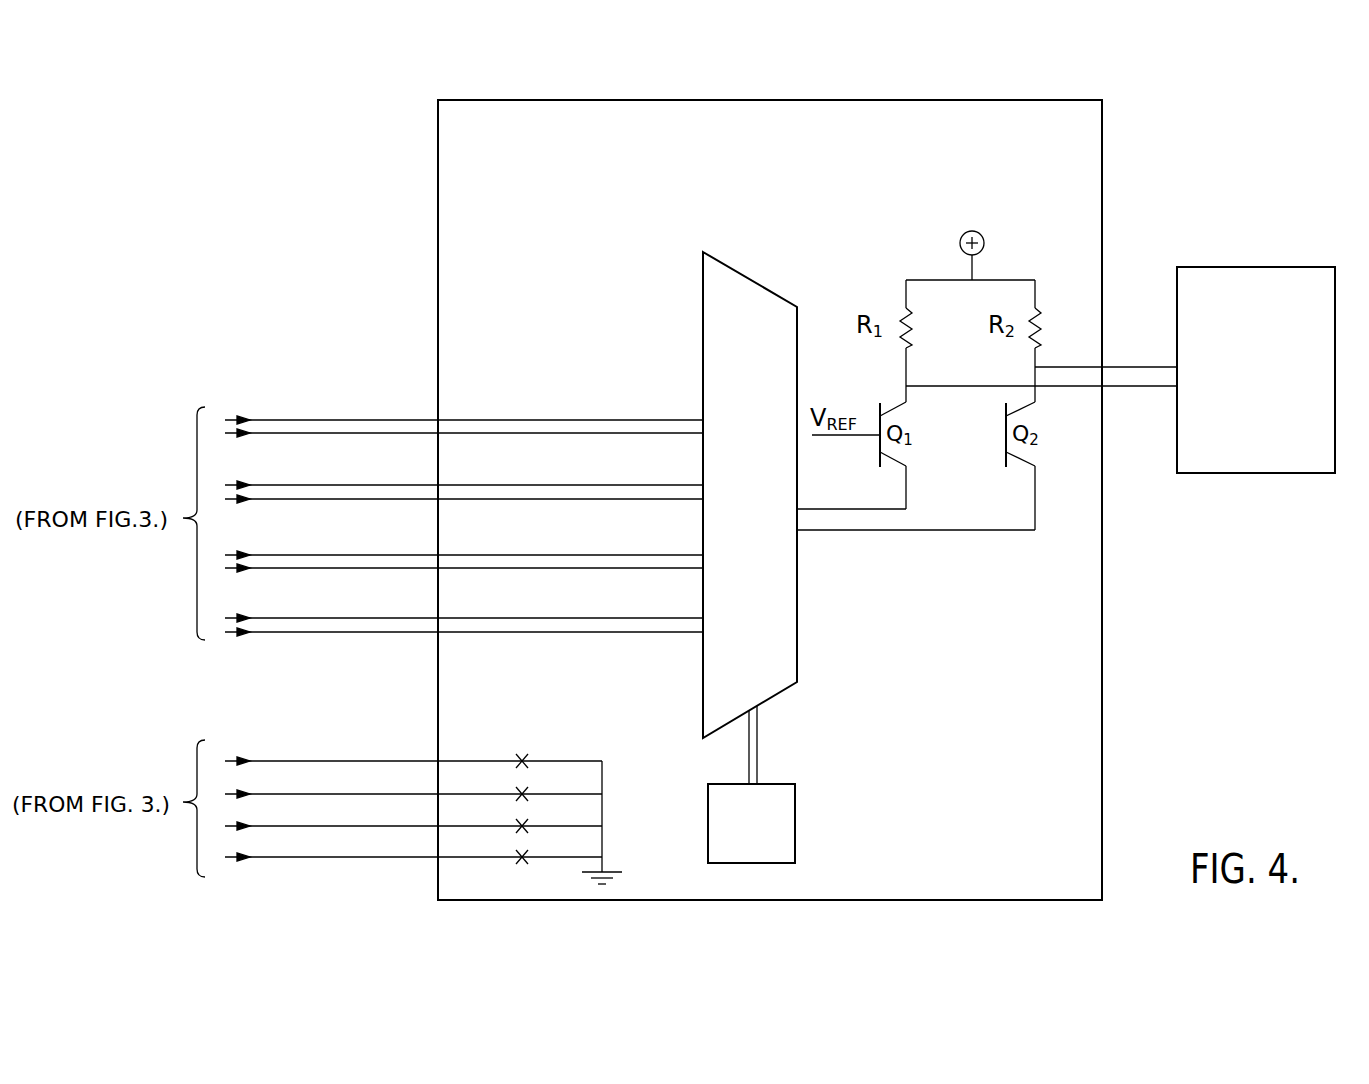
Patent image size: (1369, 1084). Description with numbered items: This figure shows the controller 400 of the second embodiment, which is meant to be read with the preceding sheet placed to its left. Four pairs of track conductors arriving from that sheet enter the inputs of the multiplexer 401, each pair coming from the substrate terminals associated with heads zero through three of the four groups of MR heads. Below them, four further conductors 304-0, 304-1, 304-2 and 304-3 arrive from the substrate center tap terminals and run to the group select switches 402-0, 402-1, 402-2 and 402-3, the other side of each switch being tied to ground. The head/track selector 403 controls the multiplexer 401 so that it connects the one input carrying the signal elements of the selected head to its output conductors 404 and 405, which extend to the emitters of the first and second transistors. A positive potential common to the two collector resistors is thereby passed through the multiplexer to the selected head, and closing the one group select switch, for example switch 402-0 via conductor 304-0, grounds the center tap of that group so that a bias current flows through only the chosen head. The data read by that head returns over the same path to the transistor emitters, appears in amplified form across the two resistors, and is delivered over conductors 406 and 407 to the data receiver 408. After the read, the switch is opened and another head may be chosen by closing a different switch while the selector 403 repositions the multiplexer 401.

The controller 400 is at (1102, 178).
The multiplexer 401 is at (727, 432).
The group select switch 402-0 is at (524, 852).
The group select switch 402-1 is at (524, 822).
The group select switch 402-2 is at (524, 790).
The group select switch 402-3 is at (526, 758).
The head/track selector 403 is at (795, 832).
The output conductor 404 is at (832, 509).
The output conductor 405 is at (923, 530).
The conductor 406 is at (1127, 367).
The conductor 407 is at (1145, 386).
The data receiver 408 is at (1213, 267).
The conductor 304-0 is at (287, 857).
The conductor 304-1 is at (287, 826).
The conductor 304-2 is at (290, 794).
The conductor 304-3 is at (275, 761).